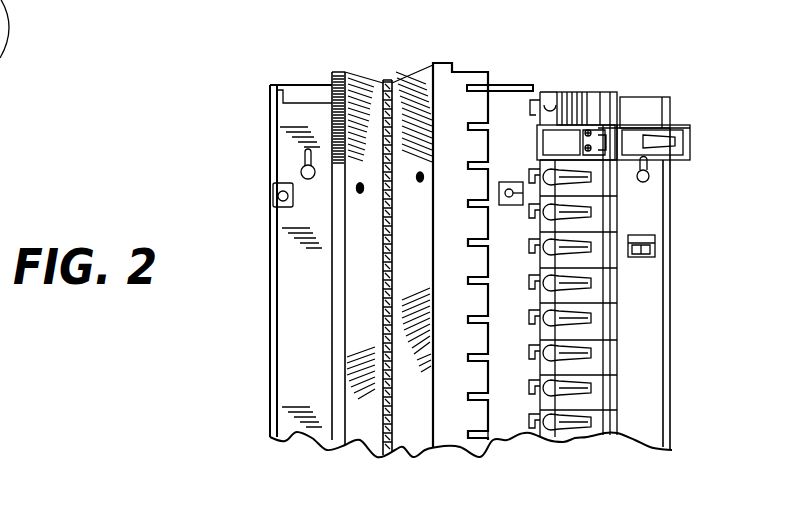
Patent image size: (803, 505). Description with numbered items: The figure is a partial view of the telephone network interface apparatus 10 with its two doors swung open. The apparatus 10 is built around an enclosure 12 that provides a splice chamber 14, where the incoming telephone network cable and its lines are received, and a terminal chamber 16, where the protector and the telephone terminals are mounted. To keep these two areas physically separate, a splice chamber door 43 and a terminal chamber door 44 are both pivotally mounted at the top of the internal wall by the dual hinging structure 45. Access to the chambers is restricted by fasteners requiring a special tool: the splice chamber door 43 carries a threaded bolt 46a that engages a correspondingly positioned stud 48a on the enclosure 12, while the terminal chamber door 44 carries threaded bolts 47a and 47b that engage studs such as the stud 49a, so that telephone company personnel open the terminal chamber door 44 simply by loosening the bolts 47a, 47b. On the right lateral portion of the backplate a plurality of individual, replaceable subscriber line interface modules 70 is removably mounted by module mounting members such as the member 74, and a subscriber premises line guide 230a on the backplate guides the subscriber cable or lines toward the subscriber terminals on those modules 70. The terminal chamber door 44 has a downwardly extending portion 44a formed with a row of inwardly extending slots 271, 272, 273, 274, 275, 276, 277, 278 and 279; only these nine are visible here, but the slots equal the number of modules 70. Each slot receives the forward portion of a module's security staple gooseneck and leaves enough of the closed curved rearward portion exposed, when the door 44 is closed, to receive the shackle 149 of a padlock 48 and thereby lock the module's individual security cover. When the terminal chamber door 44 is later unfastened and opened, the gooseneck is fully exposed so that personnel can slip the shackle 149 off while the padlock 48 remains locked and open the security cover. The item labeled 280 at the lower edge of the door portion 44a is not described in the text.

The telephone network interface apparatus 10 is at (632, 48).
The enclosure 12 is at (387, 57).
The splice chamber 14 is at (305, 260).
The terminal chamber 16 is at (507, 98).
The splice chamber door 43 is at (340, 289).
The terminal chamber door 44 is at (430, 429).
The downwardly extending portion 44a is at (463, 78).
The dual hinging structure 45 is at (387, 333).
The threaded bolt 46a is at (358, 186).
The threaded bolt 47a is at (420, 172).
The threaded bolt 47b is at (99, 3).
The padlock 48 is at (559, 93).
The stud 48a is at (273, 200).
The stud 49a is at (524, 195).
The subscriber line interface modules 70 is at (633, 299).
The module mounting member 74 is at (301, 167).
The padlock shackle 149 is at (550, 97).
The subscriber premises line guide 230a is at (640, 258).
The slot 271 is at (476, 103).
The slot 272 is at (476, 143).
The slot 273 is at (476, 181).
The slot 274 is at (476, 221).
The slot 275 is at (476, 260).
The slot 276 is at (476, 299).
The slot 277 is at (476, 337).
The slot 278 is at (476, 375).
The slot 279 is at (476, 414).
The end tab 280 is at (473, 450).